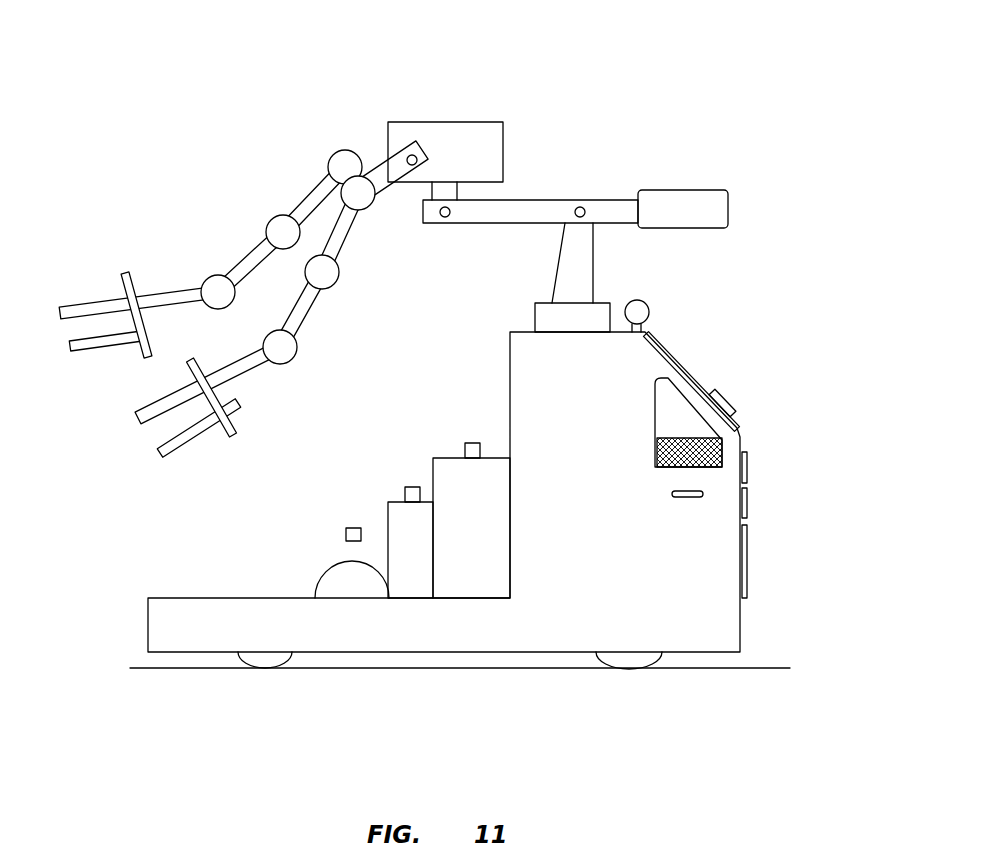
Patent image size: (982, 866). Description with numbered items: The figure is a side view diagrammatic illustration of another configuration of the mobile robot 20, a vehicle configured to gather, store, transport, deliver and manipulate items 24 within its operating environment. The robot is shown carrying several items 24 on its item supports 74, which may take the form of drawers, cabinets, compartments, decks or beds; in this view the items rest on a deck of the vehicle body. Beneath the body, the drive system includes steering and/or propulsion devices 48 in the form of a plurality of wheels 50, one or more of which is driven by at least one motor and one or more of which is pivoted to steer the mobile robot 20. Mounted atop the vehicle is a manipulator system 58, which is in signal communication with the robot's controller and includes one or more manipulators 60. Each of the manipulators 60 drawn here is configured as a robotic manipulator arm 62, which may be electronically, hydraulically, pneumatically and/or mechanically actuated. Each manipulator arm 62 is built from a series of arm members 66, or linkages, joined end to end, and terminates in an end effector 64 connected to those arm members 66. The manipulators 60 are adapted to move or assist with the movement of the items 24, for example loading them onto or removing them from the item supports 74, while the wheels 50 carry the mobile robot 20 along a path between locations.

The mobile robot 20 is at (714, 145).
The items 24 is at (352, 527).
The steering and/or propulsion devices 48 is at (291, 679).
The wheels 50 is at (262, 662).
The manipulator system 58 is at (472, 98).
The manipulators 60 is at (303, 156).
The robotic manipulator arm 62 is at (302, 367).
The end effector 64 is at (97, 305).
The arm members 66 is at (307, 192).
The item supports 74 is at (246, 597).